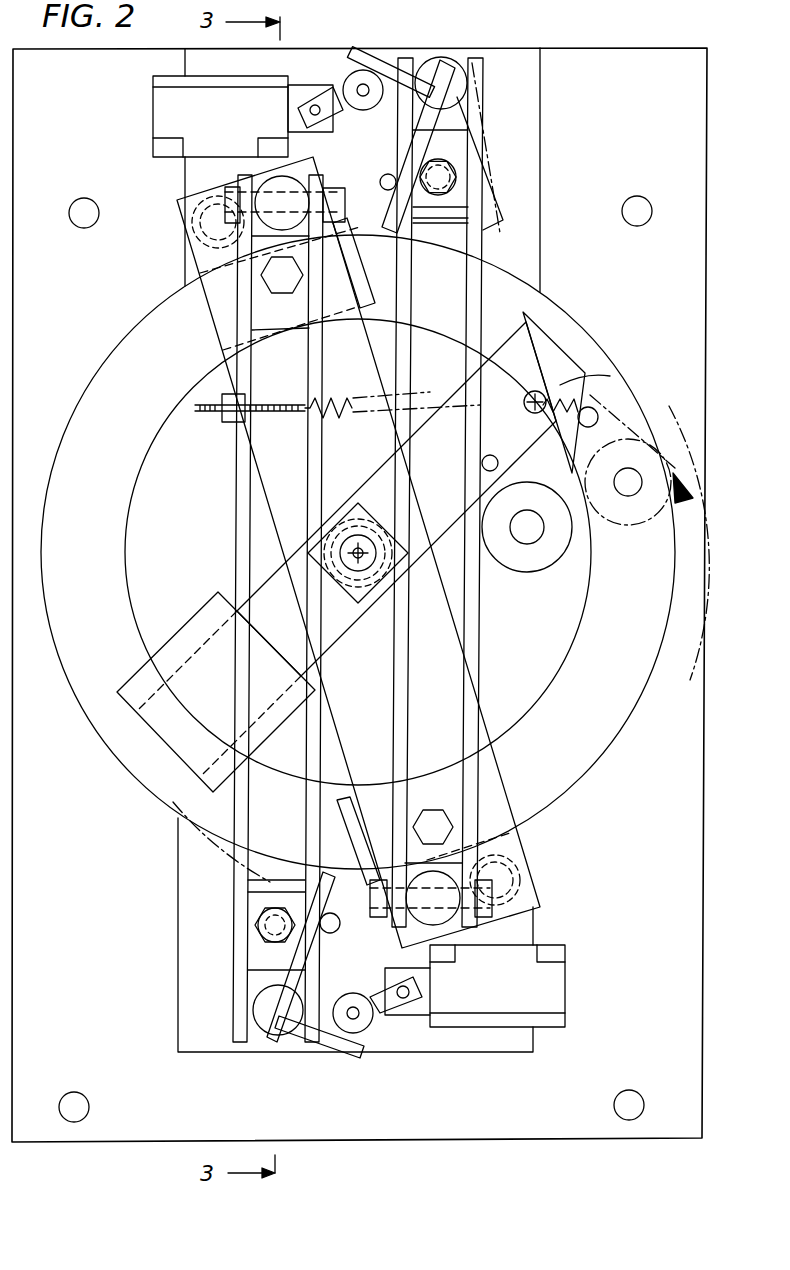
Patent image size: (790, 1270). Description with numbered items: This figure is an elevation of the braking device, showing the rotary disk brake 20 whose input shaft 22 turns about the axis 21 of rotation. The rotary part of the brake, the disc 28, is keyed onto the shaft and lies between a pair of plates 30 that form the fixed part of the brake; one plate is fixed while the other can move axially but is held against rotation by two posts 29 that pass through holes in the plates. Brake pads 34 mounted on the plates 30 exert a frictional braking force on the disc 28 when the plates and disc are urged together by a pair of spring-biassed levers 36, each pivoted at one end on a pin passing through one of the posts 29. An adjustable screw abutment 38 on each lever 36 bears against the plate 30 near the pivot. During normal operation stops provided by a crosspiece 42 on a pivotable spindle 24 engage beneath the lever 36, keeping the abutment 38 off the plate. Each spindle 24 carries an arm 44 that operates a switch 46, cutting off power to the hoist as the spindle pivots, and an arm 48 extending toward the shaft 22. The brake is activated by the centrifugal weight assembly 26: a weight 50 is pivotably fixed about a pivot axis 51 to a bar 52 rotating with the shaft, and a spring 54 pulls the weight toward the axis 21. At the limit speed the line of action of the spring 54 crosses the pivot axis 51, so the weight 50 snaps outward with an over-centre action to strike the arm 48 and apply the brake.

The rotary disk brake 20 is at (150, 343).
The axis of rotation 21 is at (348, 563).
The input shaft 22 is at (364, 560).
The spindle 24 is at (470, 98).
The centrifugal weight assembly 26 is at (555, 322).
The disc 28 is at (580, 333).
The post 29 is at (270, 928).
The plate 30 is at (283, 524).
The brake pad 34 is at (222, 308).
The spring-biassed lever 36 is at (473, 308).
The adjustable screw abutment 38 is at (282, 282).
The crosspiece 42 is at (465, 80).
The arm 44 is at (385, 58).
The switch 46 is at (340, 105).
The arm 48 is at (386, 174).
The weight 50 is at (556, 556).
The pivot axis 51 is at (600, 380).
The bar 52 is at (268, 590).
The spring 54 is at (563, 433).